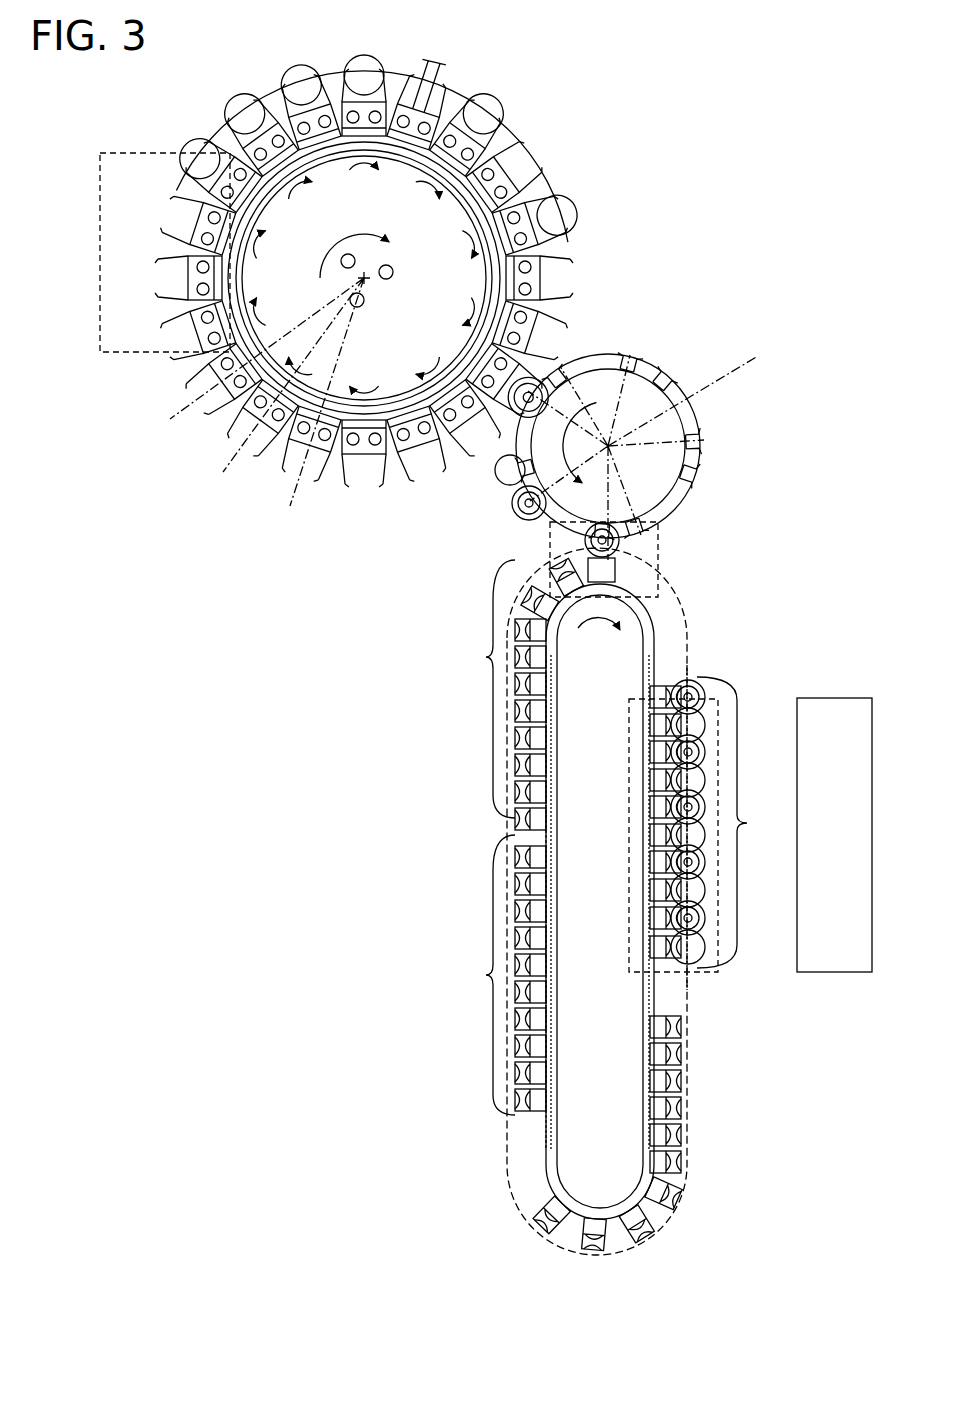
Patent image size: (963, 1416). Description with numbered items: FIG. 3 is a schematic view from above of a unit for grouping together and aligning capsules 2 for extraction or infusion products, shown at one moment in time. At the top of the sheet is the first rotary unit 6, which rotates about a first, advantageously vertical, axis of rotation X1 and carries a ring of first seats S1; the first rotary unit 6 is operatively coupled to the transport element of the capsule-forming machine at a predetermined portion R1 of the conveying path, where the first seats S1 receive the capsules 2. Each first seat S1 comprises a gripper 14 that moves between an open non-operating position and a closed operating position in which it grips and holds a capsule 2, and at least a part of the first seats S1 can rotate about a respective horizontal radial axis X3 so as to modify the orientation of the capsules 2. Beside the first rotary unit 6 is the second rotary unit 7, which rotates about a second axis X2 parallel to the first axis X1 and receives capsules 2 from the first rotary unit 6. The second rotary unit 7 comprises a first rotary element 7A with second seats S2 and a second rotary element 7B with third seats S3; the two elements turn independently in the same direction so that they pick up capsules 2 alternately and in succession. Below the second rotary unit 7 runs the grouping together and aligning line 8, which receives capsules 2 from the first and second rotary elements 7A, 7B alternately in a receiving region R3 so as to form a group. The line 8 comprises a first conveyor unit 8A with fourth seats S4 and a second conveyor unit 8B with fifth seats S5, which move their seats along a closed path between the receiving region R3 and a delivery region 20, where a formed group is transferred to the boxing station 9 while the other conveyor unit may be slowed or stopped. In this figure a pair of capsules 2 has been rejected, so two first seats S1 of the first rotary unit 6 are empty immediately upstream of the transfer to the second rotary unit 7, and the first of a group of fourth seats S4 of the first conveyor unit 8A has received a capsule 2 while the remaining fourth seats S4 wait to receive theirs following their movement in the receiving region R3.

The capsule 2 is at (432, 62).
The first rotary unit 6 is at (355, 214).
The second rotary unit 7 is at (647, 338).
The first rotary element 7A is at (700, 476).
The second rotary element 7B is at (700, 440).
The grouping together and aligning line 8 is at (465, 705).
The first conveyor unit 8A is at (562, 690).
The second conveyor unit 8B is at (565, 1011).
The boxing station 9 is at (843, 871).
The gripper 14 is at (566, 289).
The delivery region 20 is at (727, 742).
The predetermined portion of the conveying path R1 is at (97, 190).
The receiving region R3 is at (665, 592).
The first seat S1 is at (175, 336).
The second seat S2 is at (562, 363).
The third seat S3 is at (637, 358).
The fourth seat S4 is at (484, 658).
The fifth seat S5 is at (484, 975).
The first axis of rotation X1 is at (367, 281).
The second axis of rotation X2 is at (699, 394).
The horizontal radial axis X3 is at (178, 412).